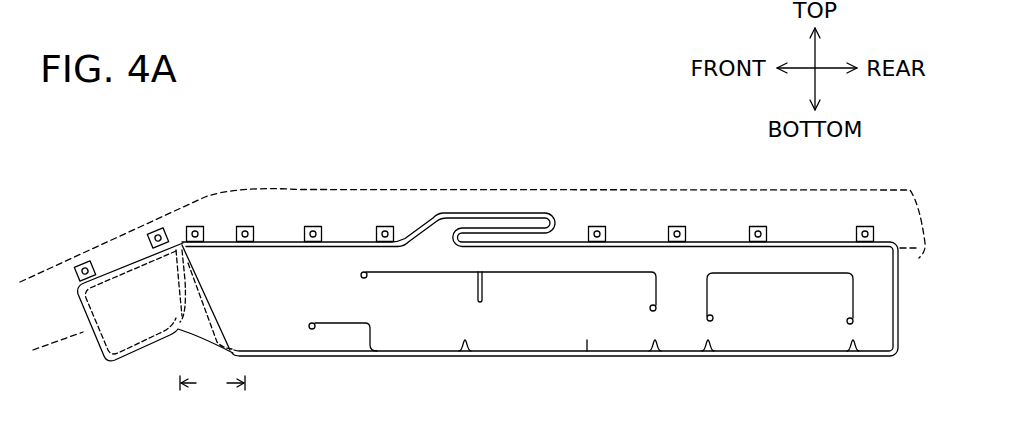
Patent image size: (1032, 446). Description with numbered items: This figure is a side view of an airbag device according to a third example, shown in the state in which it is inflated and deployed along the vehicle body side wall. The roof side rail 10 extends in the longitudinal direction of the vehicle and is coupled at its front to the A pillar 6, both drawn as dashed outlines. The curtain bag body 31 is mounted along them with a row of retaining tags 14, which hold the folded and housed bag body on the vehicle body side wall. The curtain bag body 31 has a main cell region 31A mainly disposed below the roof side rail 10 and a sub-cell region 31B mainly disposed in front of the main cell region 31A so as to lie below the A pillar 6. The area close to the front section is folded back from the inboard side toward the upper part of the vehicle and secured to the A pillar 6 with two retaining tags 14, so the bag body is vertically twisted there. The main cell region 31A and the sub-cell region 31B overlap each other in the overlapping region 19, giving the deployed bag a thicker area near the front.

The front pillar 6 is at (35, 297).
The roof side rail 10 is at (673, 210).
The retaining tags 14 is at (84, 262).
The overlapping region 19 is at (212, 382).
The curtain bag body 31 is at (578, 214).
The main cell region 31A is at (587, 340).
The sub-cell region 31B is at (93, 310).